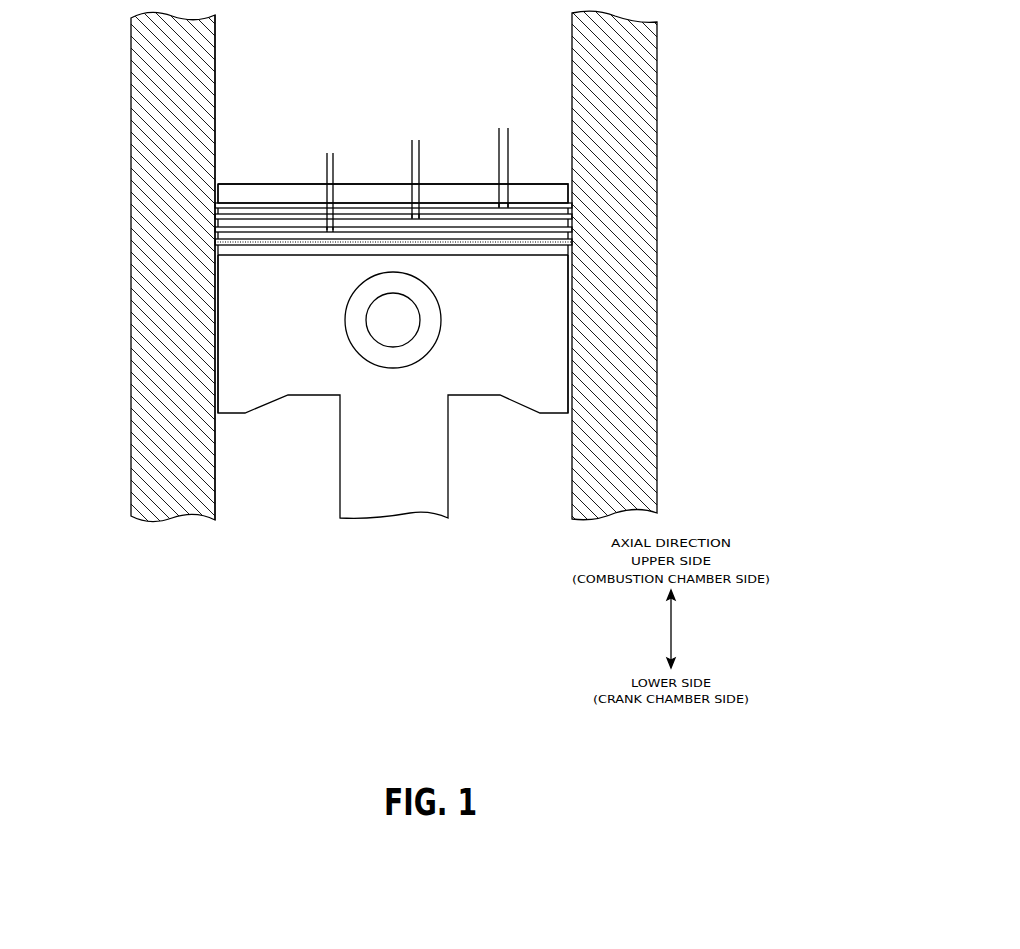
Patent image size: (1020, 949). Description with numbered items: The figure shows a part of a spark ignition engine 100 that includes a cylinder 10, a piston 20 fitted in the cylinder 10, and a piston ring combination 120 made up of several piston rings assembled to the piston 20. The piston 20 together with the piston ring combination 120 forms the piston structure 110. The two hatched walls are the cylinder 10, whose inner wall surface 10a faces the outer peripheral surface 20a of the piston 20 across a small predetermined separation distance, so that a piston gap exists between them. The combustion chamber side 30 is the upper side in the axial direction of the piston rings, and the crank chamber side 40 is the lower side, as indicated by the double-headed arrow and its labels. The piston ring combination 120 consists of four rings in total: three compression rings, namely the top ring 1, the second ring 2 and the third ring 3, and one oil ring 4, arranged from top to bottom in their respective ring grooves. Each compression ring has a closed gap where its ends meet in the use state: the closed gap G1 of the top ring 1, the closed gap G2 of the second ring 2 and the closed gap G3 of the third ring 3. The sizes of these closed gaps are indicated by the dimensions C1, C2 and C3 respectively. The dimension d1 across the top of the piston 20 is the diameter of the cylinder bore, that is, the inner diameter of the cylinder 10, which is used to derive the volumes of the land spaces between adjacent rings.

The spark ignition engine 100 is at (114, 76).
The cylinder 10 is at (130, 213).
The inner wall surface 10a is at (218, 270).
The piston 20 is at (325, 312).
The outer peripheral surface 20a is at (218, 382).
The combustion chamber side 30 is at (255, 58).
The crank chamber side 40 is at (255, 477).
The piston structure 110 is at (258, 163).
The piston ring combination 120 is at (483, 199).
The top ring 1 is at (575, 207).
The second ring 2 is at (575, 218).
The third ring 3 is at (575, 230).
The oil ring 4 is at (575, 243).
The cylinder bore diameter d1 is at (571, 97).
The closed gap size of top ring C1 is at (518, 132).
The closed gap size of second ring C2 is at (433, 143).
The closed gap size of third ring C3 is at (345, 157).
The closed gap of top ring G1 is at (497, 206).
The closed gap of second ring G2 is at (410, 217).
The closed gap of third ring G3 is at (325, 229).